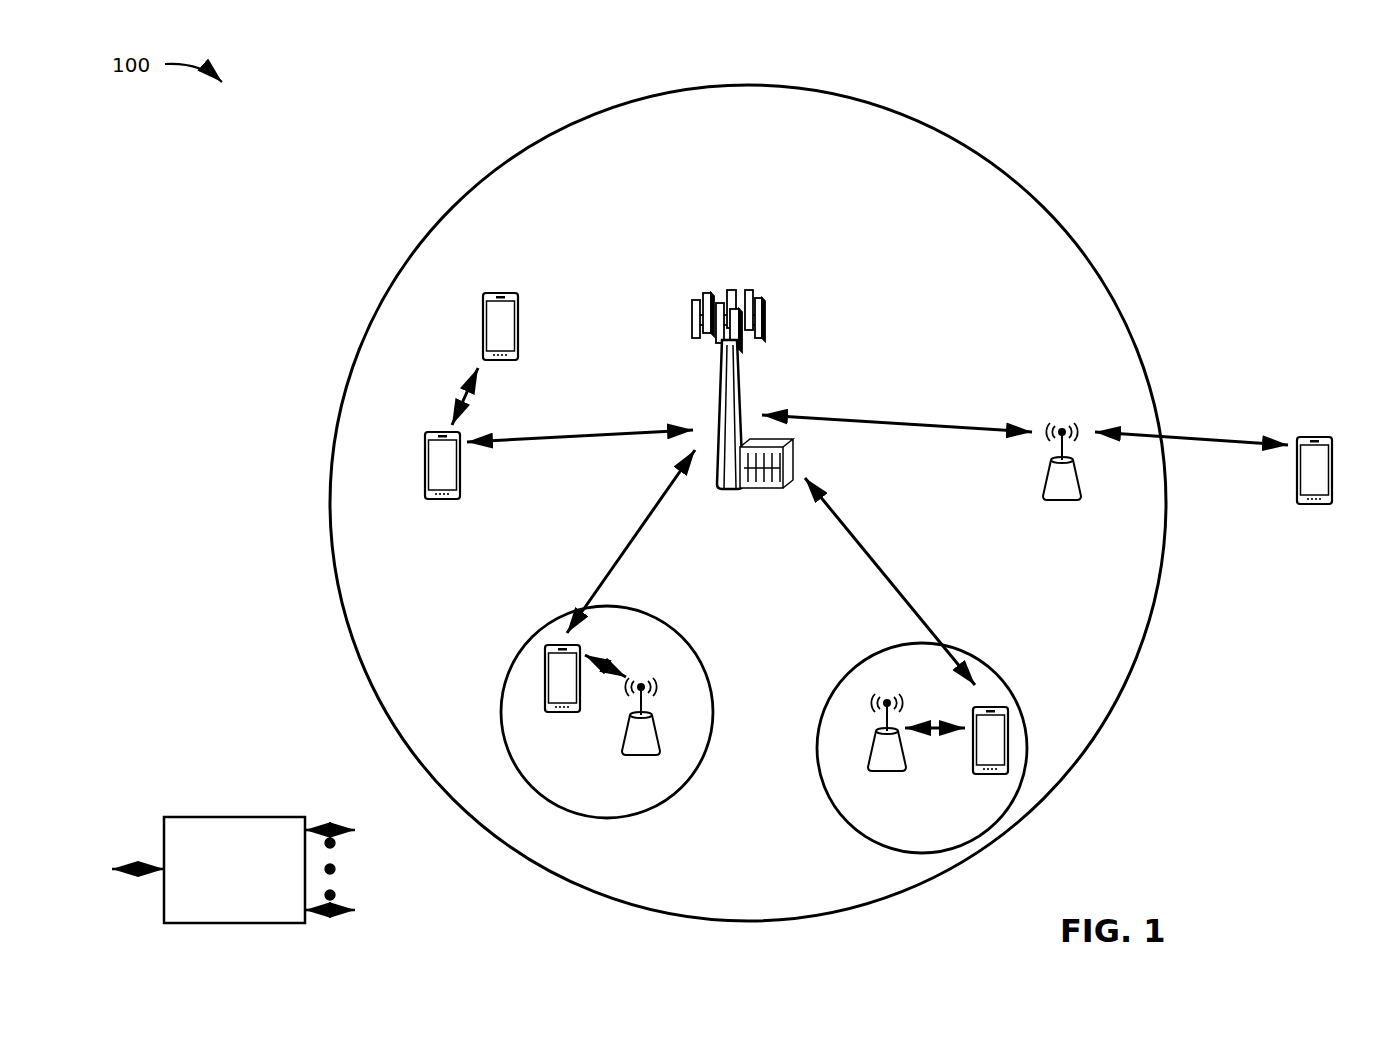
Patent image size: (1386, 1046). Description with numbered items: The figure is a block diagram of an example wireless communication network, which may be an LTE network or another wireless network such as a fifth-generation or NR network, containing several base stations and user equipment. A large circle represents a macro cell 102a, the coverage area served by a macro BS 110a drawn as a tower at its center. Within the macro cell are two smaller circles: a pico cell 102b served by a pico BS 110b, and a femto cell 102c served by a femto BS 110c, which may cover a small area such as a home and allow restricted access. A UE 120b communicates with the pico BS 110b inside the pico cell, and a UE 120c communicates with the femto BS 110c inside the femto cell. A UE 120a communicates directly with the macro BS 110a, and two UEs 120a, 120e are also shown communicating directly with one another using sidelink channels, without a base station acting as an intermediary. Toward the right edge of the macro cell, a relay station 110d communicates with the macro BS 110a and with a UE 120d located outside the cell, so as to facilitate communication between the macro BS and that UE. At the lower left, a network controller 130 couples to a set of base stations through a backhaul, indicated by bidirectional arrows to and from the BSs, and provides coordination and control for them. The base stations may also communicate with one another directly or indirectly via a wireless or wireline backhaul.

The macro cell 102a is at (1022, 185).
The pico cell 102b is at (696, 652).
The femto cell 102c is at (858, 655).
The macro BS 110a is at (737, 282).
The pico BS 110b is at (661, 740).
The femto BS 110c is at (870, 760).
The relay station 110d is at (1062, 424).
The UE 120a is at (425, 462).
The UE 120b is at (553, 713).
The UE 120c is at (976, 774).
The UE 120d is at (1326, 436).
The UE 120e is at (483, 313).
The network controller 130 is at (233, 815).